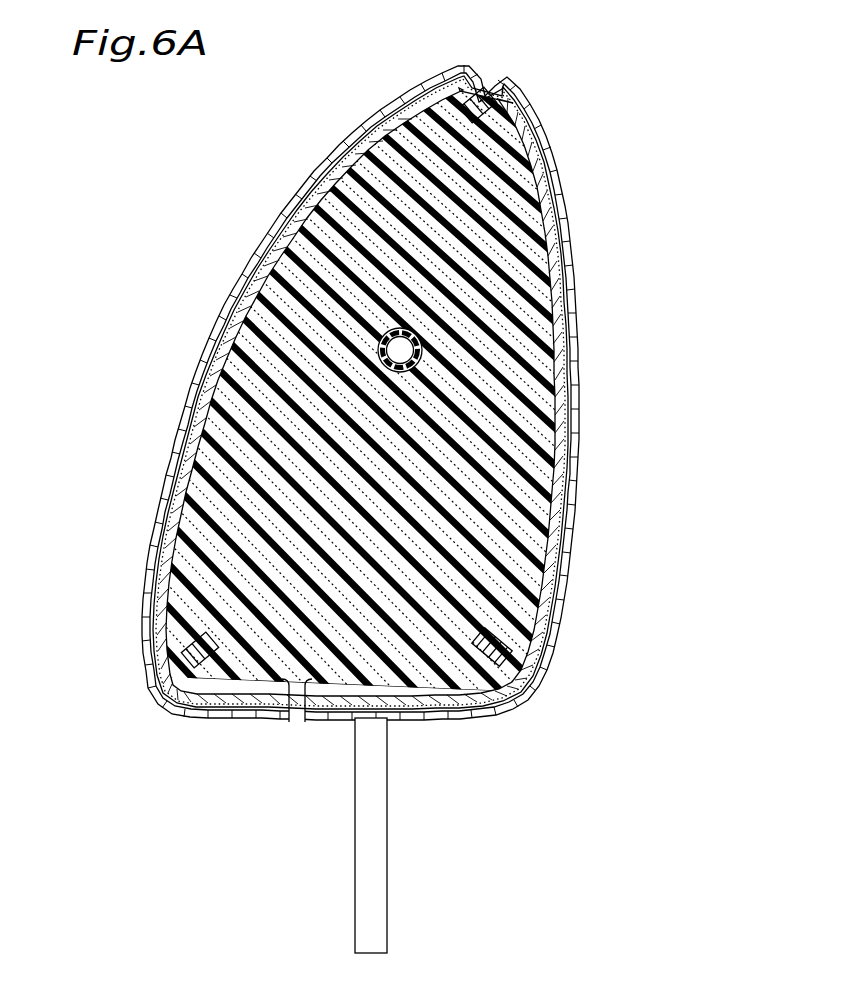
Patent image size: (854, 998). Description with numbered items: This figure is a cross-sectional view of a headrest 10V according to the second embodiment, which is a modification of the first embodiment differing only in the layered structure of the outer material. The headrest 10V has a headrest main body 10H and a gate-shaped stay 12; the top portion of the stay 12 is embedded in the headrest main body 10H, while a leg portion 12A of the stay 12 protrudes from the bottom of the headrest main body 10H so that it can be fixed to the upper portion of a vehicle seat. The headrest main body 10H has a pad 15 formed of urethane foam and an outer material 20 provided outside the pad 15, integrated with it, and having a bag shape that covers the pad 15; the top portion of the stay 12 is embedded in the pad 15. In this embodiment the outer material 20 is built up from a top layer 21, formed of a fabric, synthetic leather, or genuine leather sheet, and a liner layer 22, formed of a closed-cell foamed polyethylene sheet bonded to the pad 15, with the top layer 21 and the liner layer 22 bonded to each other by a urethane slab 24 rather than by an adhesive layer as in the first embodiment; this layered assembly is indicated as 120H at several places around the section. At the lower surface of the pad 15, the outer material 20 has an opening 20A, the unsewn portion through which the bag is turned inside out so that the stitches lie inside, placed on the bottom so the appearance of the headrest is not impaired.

The headrest 10V is at (578, 101).
The headrest main body 10H is at (567, 217).
The outer material 20 is at (284, 208).
The opening 20A is at (298, 722).
The laminated cover layer 120H is at (104, 270).
The top layer 21 is at (222, 295).
The urethane slab 24 is at (216, 322).
The liner layer 22 is at (206, 352).
The pad 15 is at (540, 470).
The stay 12 is at (382, 348).
The leg portion 12A is at (355, 905).